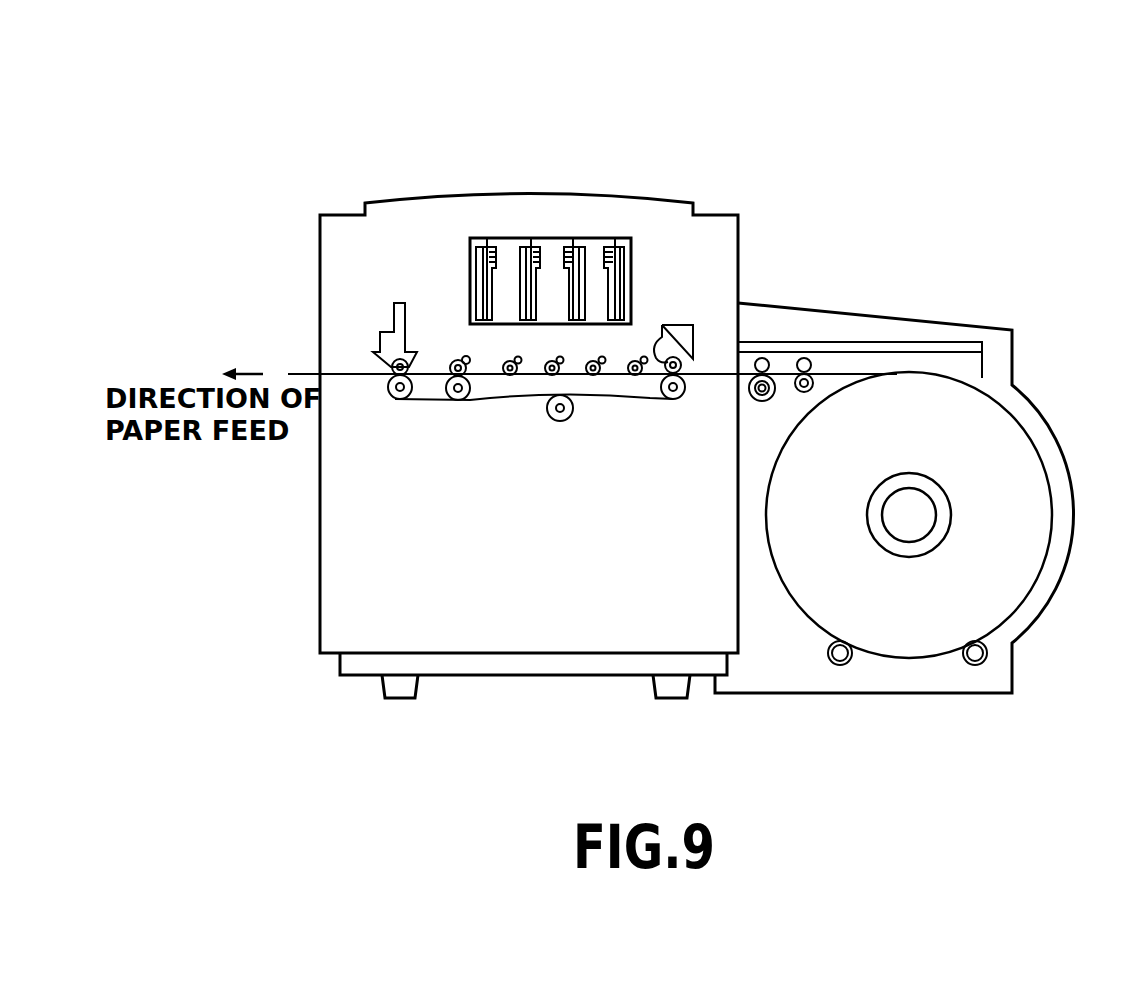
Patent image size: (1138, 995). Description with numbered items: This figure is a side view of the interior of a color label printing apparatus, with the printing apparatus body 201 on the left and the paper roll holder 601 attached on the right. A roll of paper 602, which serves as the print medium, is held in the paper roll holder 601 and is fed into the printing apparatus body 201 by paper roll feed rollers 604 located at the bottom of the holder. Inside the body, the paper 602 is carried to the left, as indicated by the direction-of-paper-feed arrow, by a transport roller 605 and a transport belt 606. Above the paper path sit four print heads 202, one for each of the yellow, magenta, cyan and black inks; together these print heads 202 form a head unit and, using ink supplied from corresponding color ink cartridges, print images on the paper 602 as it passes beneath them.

The printer main body 201 is at (417, 180).
The print head 202 is at (487, 238).
The paper roll holder 601 is at (1020, 387).
The roll of paper 602 is at (1015, 592).
The paper roll feed roller 604 is at (832, 665).
The transport roller 605 is at (393, 399).
The transport belt 606 is at (437, 401).